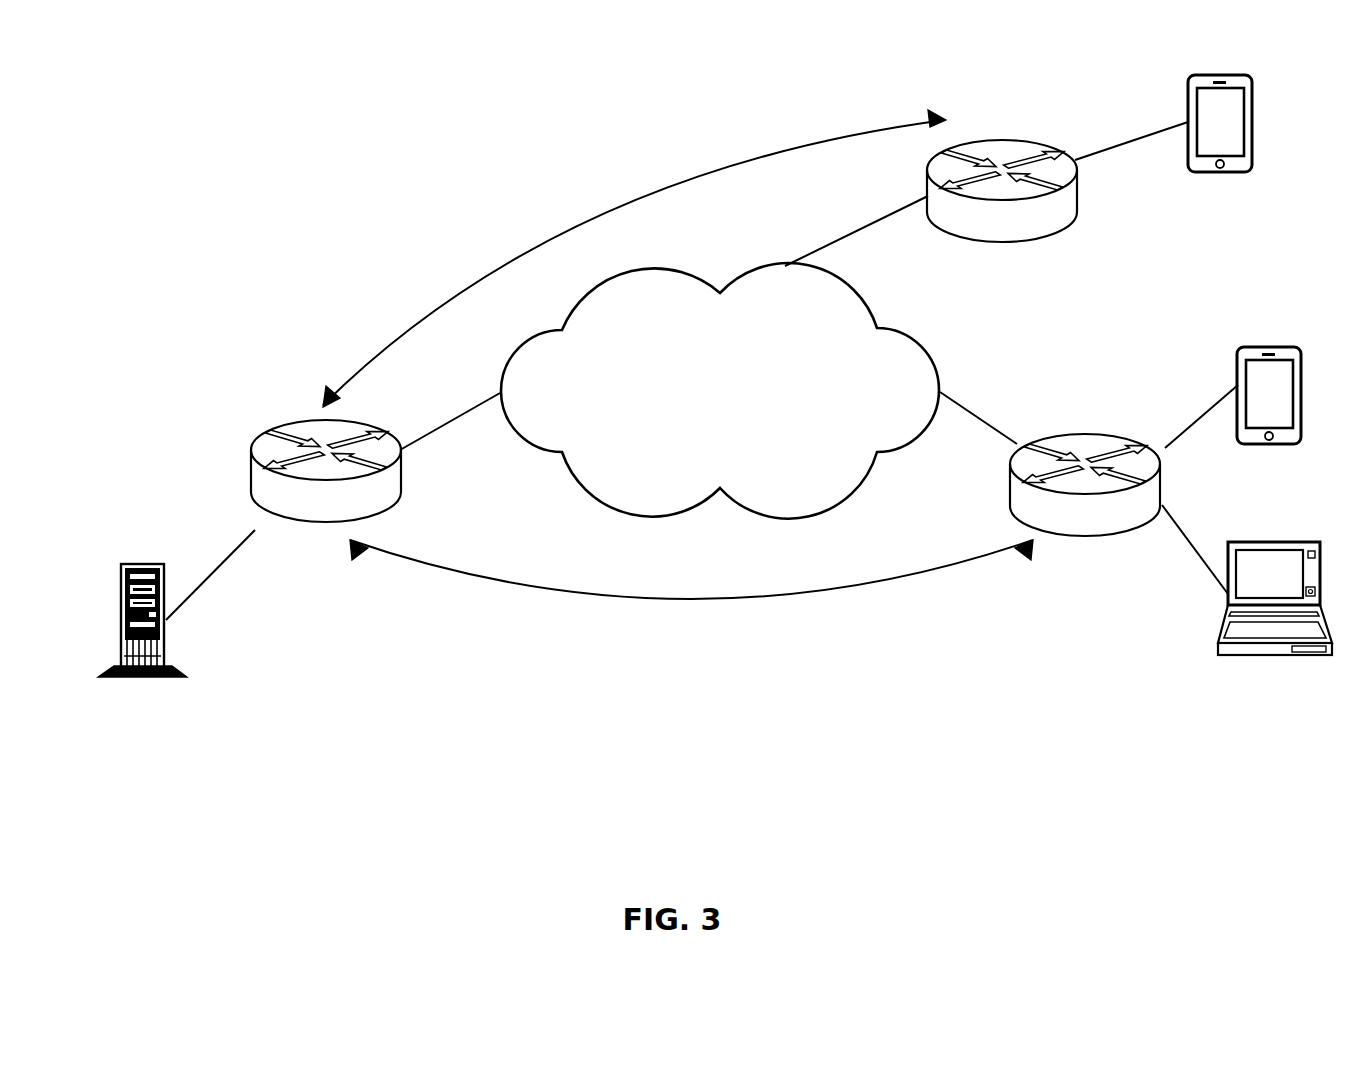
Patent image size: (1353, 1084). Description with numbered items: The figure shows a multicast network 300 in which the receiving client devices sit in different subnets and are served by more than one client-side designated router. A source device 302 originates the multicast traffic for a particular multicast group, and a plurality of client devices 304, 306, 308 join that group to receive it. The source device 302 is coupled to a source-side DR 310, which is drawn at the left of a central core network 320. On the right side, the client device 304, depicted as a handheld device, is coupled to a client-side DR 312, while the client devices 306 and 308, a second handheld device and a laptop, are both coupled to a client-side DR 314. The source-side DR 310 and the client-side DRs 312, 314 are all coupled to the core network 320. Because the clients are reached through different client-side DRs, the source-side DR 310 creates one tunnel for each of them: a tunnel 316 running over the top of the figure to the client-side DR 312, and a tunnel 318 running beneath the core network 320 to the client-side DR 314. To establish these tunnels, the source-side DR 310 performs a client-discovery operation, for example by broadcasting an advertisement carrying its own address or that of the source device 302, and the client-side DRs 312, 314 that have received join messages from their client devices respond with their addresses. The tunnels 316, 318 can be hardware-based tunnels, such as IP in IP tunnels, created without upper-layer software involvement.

The multicast network 300 is at (202, 152).
The source device 302 is at (141, 680).
The client device 304 is at (1207, 172).
The client device 306 is at (1268, 345).
The client device 308 is at (1273, 657).
The source-side DR 310 is at (252, 486).
The client-side DR 312 is at (983, 140).
The client-side DR 314 is at (1080, 437).
The tunnel 316 is at (517, 253).
The tunnel 318 is at (728, 600).
The core network 320 is at (720, 391).